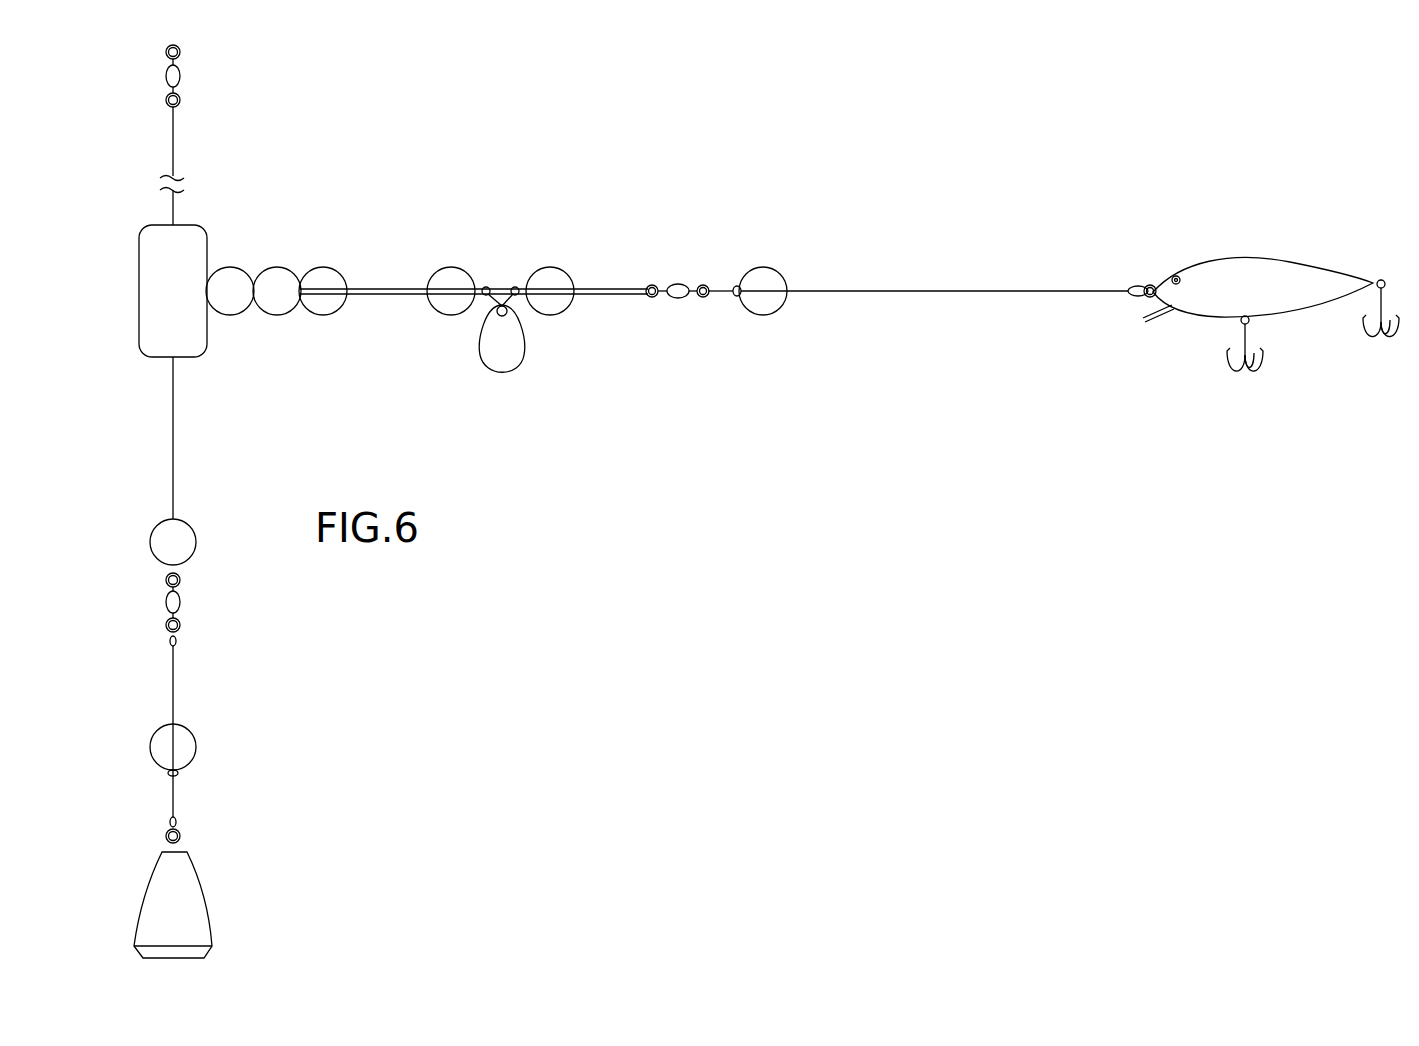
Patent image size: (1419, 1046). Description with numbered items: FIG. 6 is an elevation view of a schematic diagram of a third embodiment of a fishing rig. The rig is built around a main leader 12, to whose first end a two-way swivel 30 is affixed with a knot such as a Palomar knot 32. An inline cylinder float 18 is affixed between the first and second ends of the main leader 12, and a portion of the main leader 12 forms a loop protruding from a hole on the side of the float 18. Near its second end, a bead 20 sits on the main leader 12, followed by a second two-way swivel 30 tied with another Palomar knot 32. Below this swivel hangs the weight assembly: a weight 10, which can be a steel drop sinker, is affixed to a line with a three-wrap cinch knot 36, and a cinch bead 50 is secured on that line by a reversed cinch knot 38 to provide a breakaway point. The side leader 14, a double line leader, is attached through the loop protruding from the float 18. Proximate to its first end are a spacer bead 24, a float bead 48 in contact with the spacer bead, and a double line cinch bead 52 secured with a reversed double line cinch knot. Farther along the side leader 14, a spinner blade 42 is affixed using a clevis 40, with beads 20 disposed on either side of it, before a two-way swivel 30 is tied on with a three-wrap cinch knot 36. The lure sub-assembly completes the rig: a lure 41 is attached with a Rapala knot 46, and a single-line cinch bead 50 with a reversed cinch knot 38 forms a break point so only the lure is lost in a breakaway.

The weight 10 is at (196, 885).
The main leader 12 is at (180, 207).
The side leader 14 is at (393, 289).
The inline cylinder float 18 is at (183, 362).
The bead 20 is at (553, 278).
The spacer bead 24 is at (227, 280).
The two-way swivel 30 is at (182, 76).
The Palomar knot 32 is at (178, 108).
The three-wrap cinch knot 36 is at (644, 289).
The cinch knot 38 is at (737, 298).
The clevis 40 is at (515, 287).
The lure 41 is at (1268, 262).
The spinner blade 42 is at (500, 364).
The Rapala knot 46 is at (1132, 288).
The float bead 48 is at (282, 306).
The cinch bead 50 is at (766, 268).
The double line cinch bead 52 is at (317, 268).